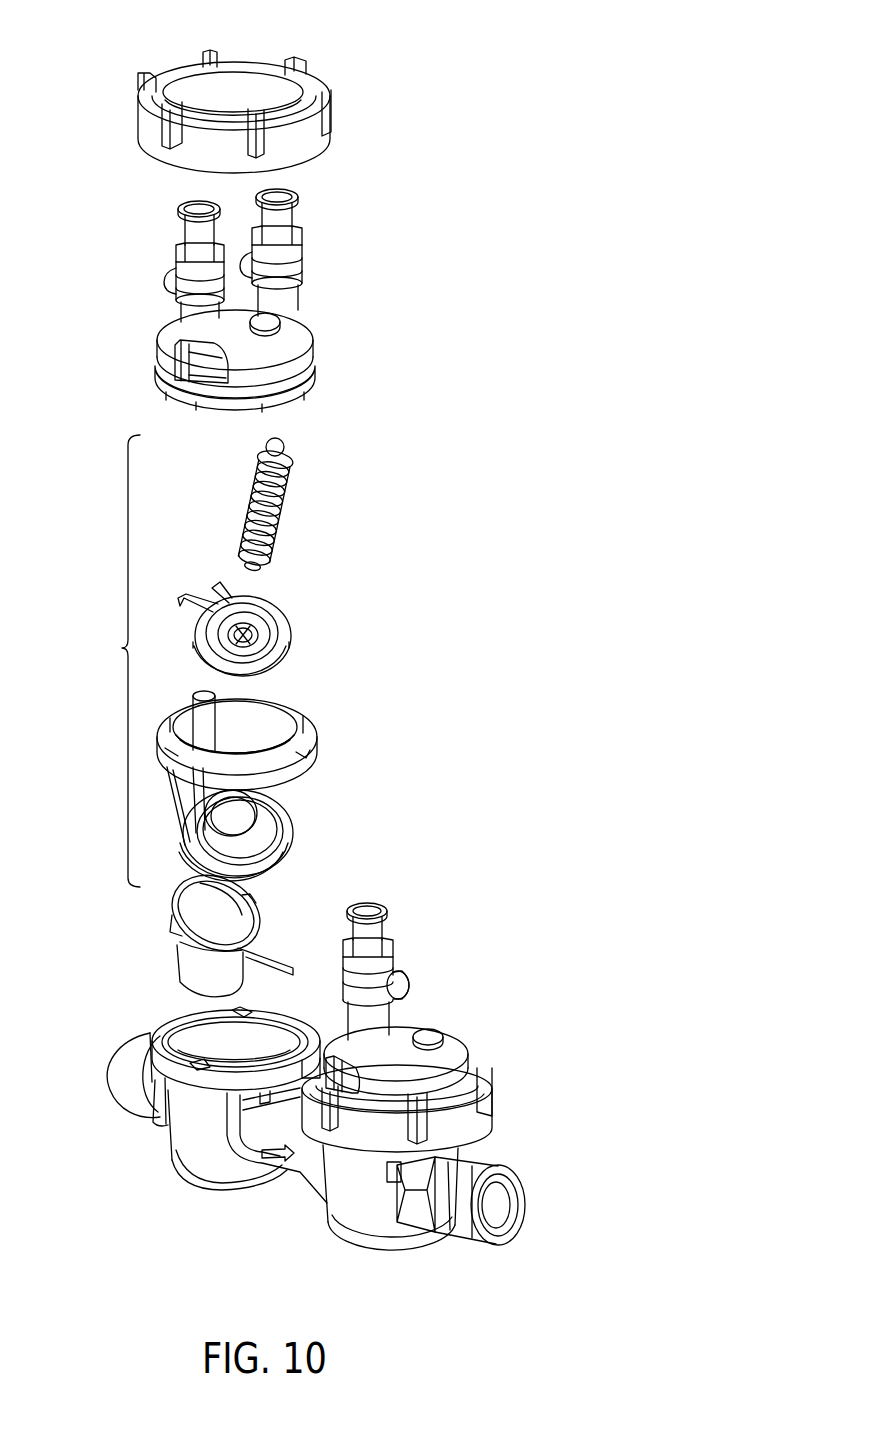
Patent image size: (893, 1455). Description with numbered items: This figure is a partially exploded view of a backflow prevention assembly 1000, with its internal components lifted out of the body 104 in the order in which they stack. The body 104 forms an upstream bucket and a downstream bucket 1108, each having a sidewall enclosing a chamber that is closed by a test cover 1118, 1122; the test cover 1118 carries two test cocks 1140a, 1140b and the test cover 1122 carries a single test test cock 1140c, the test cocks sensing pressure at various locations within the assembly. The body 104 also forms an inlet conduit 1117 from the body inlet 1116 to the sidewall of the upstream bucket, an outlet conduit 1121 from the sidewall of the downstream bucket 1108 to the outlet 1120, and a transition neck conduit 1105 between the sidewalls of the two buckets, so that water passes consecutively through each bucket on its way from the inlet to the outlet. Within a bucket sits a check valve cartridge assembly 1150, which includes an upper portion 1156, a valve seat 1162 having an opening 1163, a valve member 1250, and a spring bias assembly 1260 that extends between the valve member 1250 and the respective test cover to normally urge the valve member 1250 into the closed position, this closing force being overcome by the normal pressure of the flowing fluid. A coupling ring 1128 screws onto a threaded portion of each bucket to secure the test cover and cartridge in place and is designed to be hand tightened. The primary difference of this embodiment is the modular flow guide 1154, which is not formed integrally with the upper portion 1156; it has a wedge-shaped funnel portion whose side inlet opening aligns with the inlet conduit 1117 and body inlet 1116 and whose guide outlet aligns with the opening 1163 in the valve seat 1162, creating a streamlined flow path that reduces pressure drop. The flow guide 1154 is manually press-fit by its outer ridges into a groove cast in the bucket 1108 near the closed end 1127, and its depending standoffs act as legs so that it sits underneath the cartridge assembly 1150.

The backflow prevention assembly 1000 is at (460, 265).
The coupling ring 1128 is at (240, 88).
The test cock 1140a is at (190, 237).
The test cock 1140b is at (287, 215).
The test cock 1140c is at (383, 930).
The test cover 1118 is at (172, 342).
The cartridge assembly 1150 is at (106, 661).
The spring bias assembly 1260 is at (293, 457).
The valve member 1250 is at (263, 623).
The upper portion 1156 is at (268, 715).
The opening 1163 is at (250, 833).
The valve seat 1162 is at (290, 838).
The modular flow guide 1154 is at (180, 937).
The body 104 is at (183, 1165).
The body inlet 1116 is at (115, 1070).
The inlet conduit 1117 is at (157, 1115).
The closed end 1127 is at (223, 1192).
The transition neck conduit 1105 is at (300, 1172).
The test cover 1122 is at (467, 1042).
The bucket 1108 is at (360, 1232).
The outlet conduit 1121 is at (420, 1198).
The outlet 1120 is at (503, 1213).